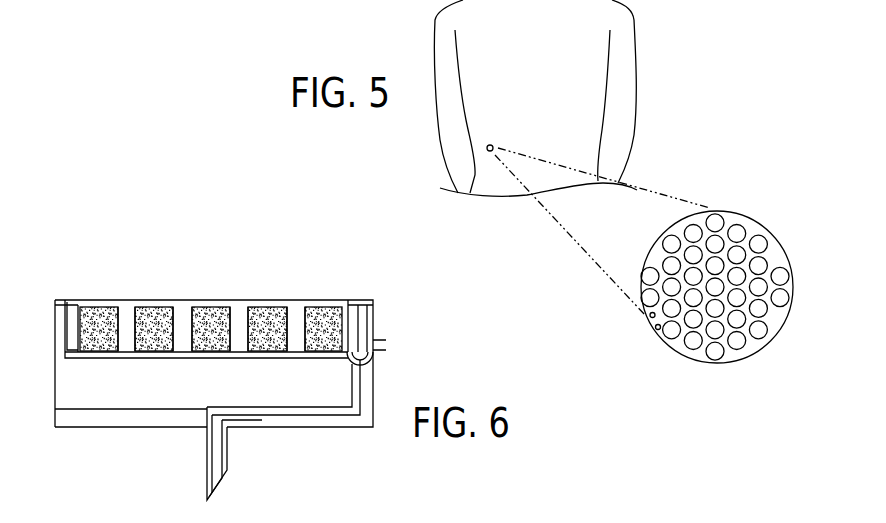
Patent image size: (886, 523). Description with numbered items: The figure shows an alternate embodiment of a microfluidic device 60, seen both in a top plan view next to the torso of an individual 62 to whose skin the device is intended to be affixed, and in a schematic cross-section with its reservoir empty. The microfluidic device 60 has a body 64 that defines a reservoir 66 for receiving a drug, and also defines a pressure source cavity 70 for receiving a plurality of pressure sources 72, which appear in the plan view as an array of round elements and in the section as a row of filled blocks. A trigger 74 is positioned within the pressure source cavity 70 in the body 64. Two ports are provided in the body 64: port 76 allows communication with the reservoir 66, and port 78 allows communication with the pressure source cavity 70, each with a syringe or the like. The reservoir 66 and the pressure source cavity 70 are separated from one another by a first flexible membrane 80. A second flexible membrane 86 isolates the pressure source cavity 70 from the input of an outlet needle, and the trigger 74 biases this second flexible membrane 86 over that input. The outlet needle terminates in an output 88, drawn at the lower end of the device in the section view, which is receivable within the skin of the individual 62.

In FIG. 5, the microfluidic device 60 is at (759, 207).
In FIG. 5, the individual 62 is at (625, 105).
In FIG. 5, the body 64 is at (681, 346).
In FIG. 6, the body 64 is at (54, 370).
In FIG. 6, the reservoir 66 is at (103, 411).
In FIG. 6, the pressure source cavity 70 is at (240, 317).
In FIG. 5, the pressure sources 72 is at (727, 350).
In FIG. 6, the pressure sources 72 is at (100, 310).
In FIG. 6, the trigger 74 is at (362, 322).
In FIG. 5, the port 76 is at (658, 331).
In FIG. 6, the port 76 is at (60, 300).
In FIG. 5, the port 78 is at (648, 315).
In FIG. 6, the port 78 is at (75, 300).
In FIG. 6, the first flexible membrane 80 is at (270, 358).
In FIG. 6, the second flexible membrane 86 is at (376, 367).
In FIG. 6, the output 88 is at (218, 484).